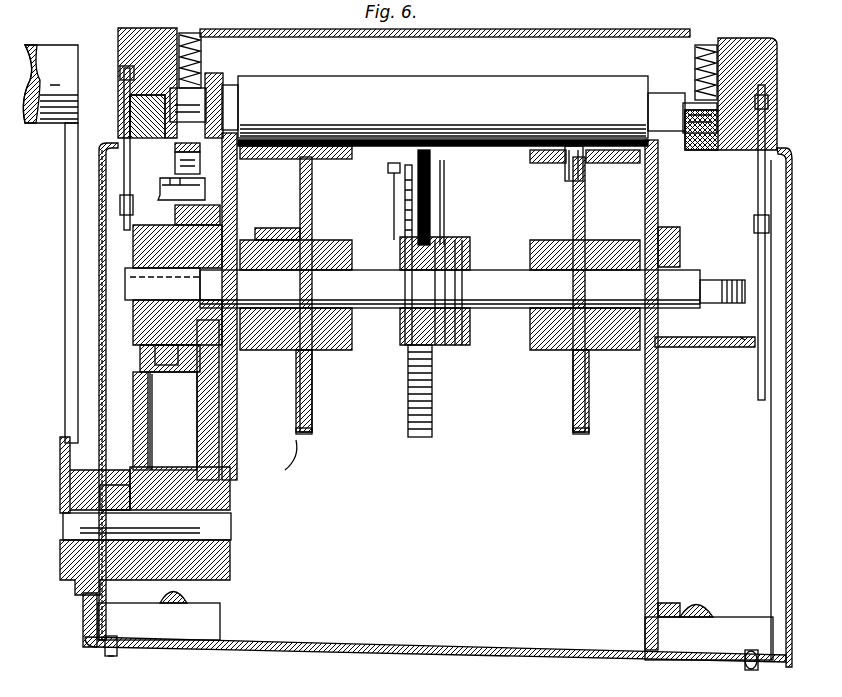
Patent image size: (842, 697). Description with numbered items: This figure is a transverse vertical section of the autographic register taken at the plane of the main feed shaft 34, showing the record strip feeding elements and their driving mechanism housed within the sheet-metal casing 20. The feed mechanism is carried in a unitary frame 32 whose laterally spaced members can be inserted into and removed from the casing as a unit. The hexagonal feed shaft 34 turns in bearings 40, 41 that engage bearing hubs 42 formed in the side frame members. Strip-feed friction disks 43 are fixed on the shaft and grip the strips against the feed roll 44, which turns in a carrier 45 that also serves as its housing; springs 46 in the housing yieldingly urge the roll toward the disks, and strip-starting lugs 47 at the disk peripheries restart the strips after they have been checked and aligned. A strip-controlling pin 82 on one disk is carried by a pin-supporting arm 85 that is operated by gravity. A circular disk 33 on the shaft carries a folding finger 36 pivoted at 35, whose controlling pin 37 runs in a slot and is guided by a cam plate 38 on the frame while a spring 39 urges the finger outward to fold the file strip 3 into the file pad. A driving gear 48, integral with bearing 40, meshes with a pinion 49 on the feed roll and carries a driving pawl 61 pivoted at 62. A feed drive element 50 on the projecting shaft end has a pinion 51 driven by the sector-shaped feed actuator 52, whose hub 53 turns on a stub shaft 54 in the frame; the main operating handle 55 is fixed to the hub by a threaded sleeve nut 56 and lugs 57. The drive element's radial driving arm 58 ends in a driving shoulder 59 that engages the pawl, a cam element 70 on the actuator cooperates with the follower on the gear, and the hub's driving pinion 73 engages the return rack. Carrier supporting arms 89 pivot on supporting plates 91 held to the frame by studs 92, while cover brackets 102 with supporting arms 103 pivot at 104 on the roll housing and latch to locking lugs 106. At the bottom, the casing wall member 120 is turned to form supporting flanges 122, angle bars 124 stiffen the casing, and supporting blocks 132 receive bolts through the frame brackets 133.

The cross bar 3 is at (298, 145).
The casing 20 is at (60, 470).
The unitary frame 32 is at (237, 478).
The circular disk 33 is at (428, 437).
The main feed shaft 34 is at (435, 288).
The pivot of folding finger 35 is at (470, 243).
The folding finger 36 is at (446, 183).
The controlling lug or pin 37 is at (394, 174).
The cam plate 38 is at (404, 220).
The spring 39 is at (432, 200).
The bearing 40 is at (258, 350).
The bearing 41 is at (672, 352).
The bearing hubs 42 is at (296, 390).
The strip-feed friction disks 43 is at (306, 436).
The feed roll 44 is at (262, 432).
The carrier 45 is at (215, 28).
The springs 46 is at (202, 50).
The strip-starting lugs 47 is at (300, 165).
The driving gear 48 is at (197, 400).
The pinion 49 is at (222, 95).
The feed drive element 50 is at (133, 238).
The pinion 51 is at (133, 330).
The feed actuator 52 is at (133, 410).
The supporting hub 53 is at (165, 470).
The stub shaft 54 is at (232, 528).
The main operating handle 55 is at (65, 335).
The threaded sleeve nut 56 is at (75, 588).
The lugs 57 is at (118, 485).
The driving arm 58 is at (220, 215).
The driving shoulder or notch 59 is at (175, 178).
The driving pawl 61 is at (185, 146).
The pawl pivot 62 is at (175, 166).
The cam element 70 is at (165, 392).
The driving pinion 73 is at (277, 455).
The strip-controlling pin 82 is at (574, 150).
The pin-supporting arm 85 is at (566, 178).
The carrier supporting arm 89 is at (130, 122).
The supporting plates 91 is at (100, 375).
The supporting studs 92 is at (745, 350).
The brackets 102 is at (757, 185).
The supporting arm 103 is at (122, 80).
The pivot 104 is at (140, 60).
The locking lug 106 is at (120, 203).
The screw 120 is at (748, 668).
The supporting flange 122 is at (118, 648).
The angle bars 124 is at (85, 640).
The supporting blocks 132 is at (668, 650).
The supporting brackets 133 is at (182, 600).